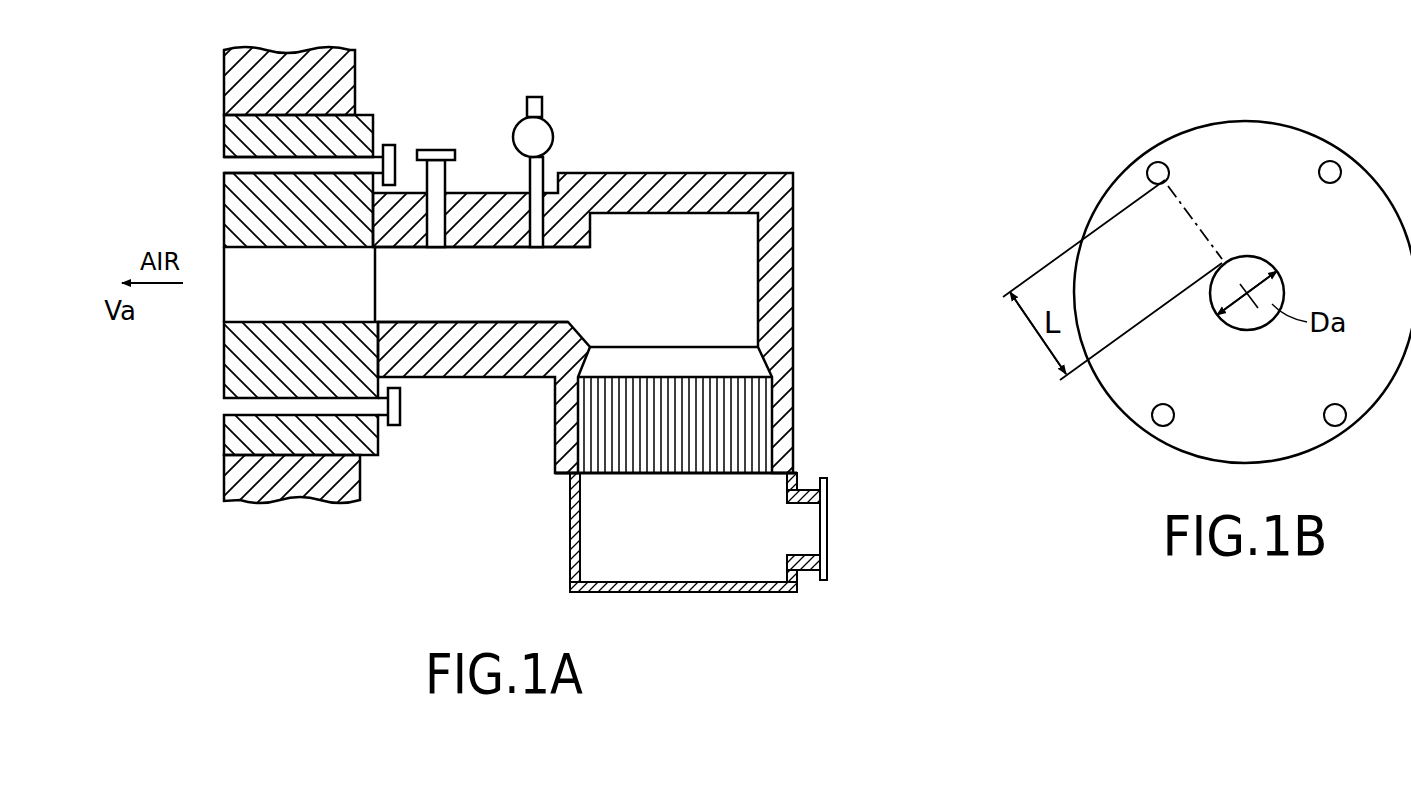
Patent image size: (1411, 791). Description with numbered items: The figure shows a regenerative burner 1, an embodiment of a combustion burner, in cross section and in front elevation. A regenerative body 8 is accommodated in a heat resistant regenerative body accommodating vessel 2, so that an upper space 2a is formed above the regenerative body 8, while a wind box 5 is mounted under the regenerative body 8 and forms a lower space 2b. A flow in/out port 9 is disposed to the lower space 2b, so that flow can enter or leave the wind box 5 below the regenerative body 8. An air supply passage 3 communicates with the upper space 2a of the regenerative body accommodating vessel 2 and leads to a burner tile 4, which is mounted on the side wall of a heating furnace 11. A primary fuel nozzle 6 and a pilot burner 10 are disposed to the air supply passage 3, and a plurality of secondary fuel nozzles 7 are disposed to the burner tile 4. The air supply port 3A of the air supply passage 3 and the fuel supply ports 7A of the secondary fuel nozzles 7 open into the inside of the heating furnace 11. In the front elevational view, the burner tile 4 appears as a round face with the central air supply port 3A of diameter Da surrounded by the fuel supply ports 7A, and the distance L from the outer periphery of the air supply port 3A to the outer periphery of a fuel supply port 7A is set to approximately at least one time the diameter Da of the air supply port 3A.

In FIG. 1A, the regenerative burner 1 is at (472, 101).
In FIG. 1A, the regenerative body accommodating vessel 2 is at (637, 192).
In FIG. 1A, the upper space 2a is at (737, 255).
In FIG. 1A, the lower space 2b is at (715, 562).
In FIG. 1A, the air supply passage 3 is at (572, 287).
In FIG. 1A, the air supply port 3A is at (238, 268).
In FIG. 1B, the air supply port 3A is at (1247, 323).
In FIG. 1A, the burner tile 4 is at (235, 363).
In FIG. 1B, the burner tile 4 is at (1125, 397).
In FIG. 1A, the wind box 5 is at (668, 593).
In FIG. 1A, the primary fuel nozzle 6 is at (435, 183).
In FIG. 1A, the secondary fuel nozzle 7 is at (363, 163).
In FIG. 1A, the fuel supply port 7A is at (237, 165).
In FIG. 1B, the fuel supply port 7A is at (1348, 420).
In FIG. 1A, the regenerative body 8 is at (662, 455).
In FIG. 1A, the flow in/out port 9 is at (813, 525).
In FIG. 1A, the pilot burner 10 is at (543, 100).
In FIG. 1A, the heating furnace 11 is at (203, 464).